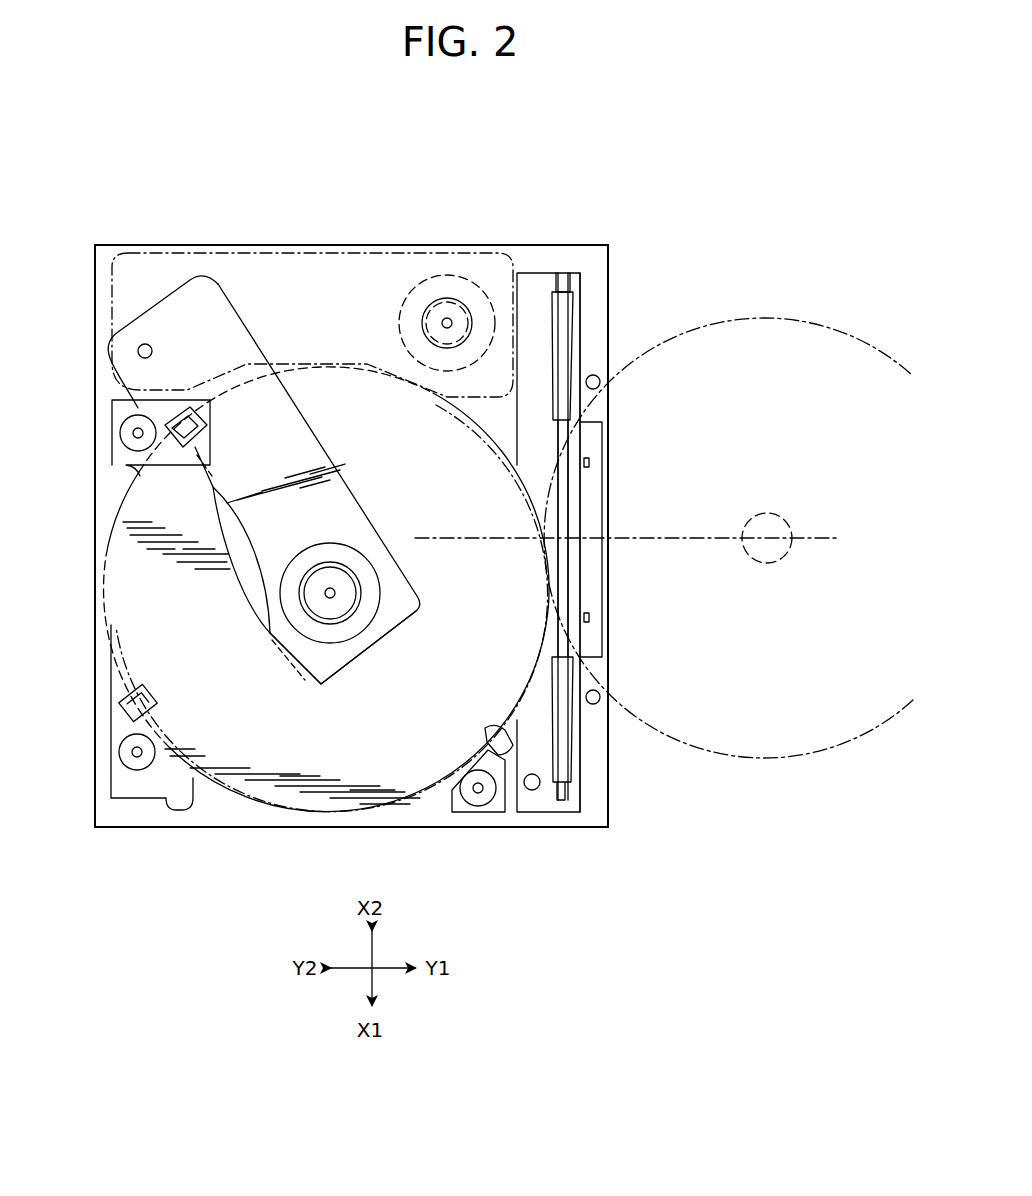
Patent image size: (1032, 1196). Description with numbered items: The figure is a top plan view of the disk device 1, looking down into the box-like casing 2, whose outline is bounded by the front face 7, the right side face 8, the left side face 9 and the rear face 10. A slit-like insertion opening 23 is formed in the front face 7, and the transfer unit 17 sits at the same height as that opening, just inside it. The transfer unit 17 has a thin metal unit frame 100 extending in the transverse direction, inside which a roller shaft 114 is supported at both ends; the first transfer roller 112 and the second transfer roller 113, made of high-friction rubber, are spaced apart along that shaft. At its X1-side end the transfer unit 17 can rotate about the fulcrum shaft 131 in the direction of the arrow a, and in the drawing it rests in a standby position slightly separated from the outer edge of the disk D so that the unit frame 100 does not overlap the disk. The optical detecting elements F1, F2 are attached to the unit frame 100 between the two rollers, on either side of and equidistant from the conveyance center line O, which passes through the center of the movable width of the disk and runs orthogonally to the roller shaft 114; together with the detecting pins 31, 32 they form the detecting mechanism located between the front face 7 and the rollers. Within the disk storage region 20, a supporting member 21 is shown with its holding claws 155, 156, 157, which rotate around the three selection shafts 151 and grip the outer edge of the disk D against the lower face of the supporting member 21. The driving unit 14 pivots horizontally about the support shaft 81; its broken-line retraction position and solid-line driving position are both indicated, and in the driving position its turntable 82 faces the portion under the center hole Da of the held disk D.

The disk device 1 is at (373, 211).
The casing 2 is at (174, 236).
The front face 7 is at (610, 515).
The right side face 8 is at (313, 245).
The left side face 9 is at (240, 828).
The rear face 10 is at (95, 520).
The driving unit 14 is at (224, 283).
The transfer unit 17 is at (594, 445).
The disk storage region 20 is at (352, 676).
The supporting member 21 is at (145, 585).
The insertion opening 23 is at (608, 330).
The detecting pin 31 is at (601, 380).
The detecting pin 32 is at (601, 690).
The support shaft 81 is at (138, 351).
The turntable 82 is at (362, 612).
The unit frame 100 is at (533, 290).
The first transfer roller 112 is at (570, 763).
The second transfer roller 113 is at (565, 315).
The roller shaft 114 is at (570, 578).
The fulcrum shaft 131 is at (532, 791).
The selection shaft 151 is at (128, 432).
The holding claw 155 is at (182, 410).
The holding claw 156 is at (125, 713).
The holding claw 157 is at (484, 732).
The disk D is at (118, 668).
The center hole Da is at (375, 579).
The conveyance center line O is at (850, 538).
The arrow a is at (500, 430).
The optical detecting element F1 is at (590, 463).
The optical detecting element F2 is at (590, 618).